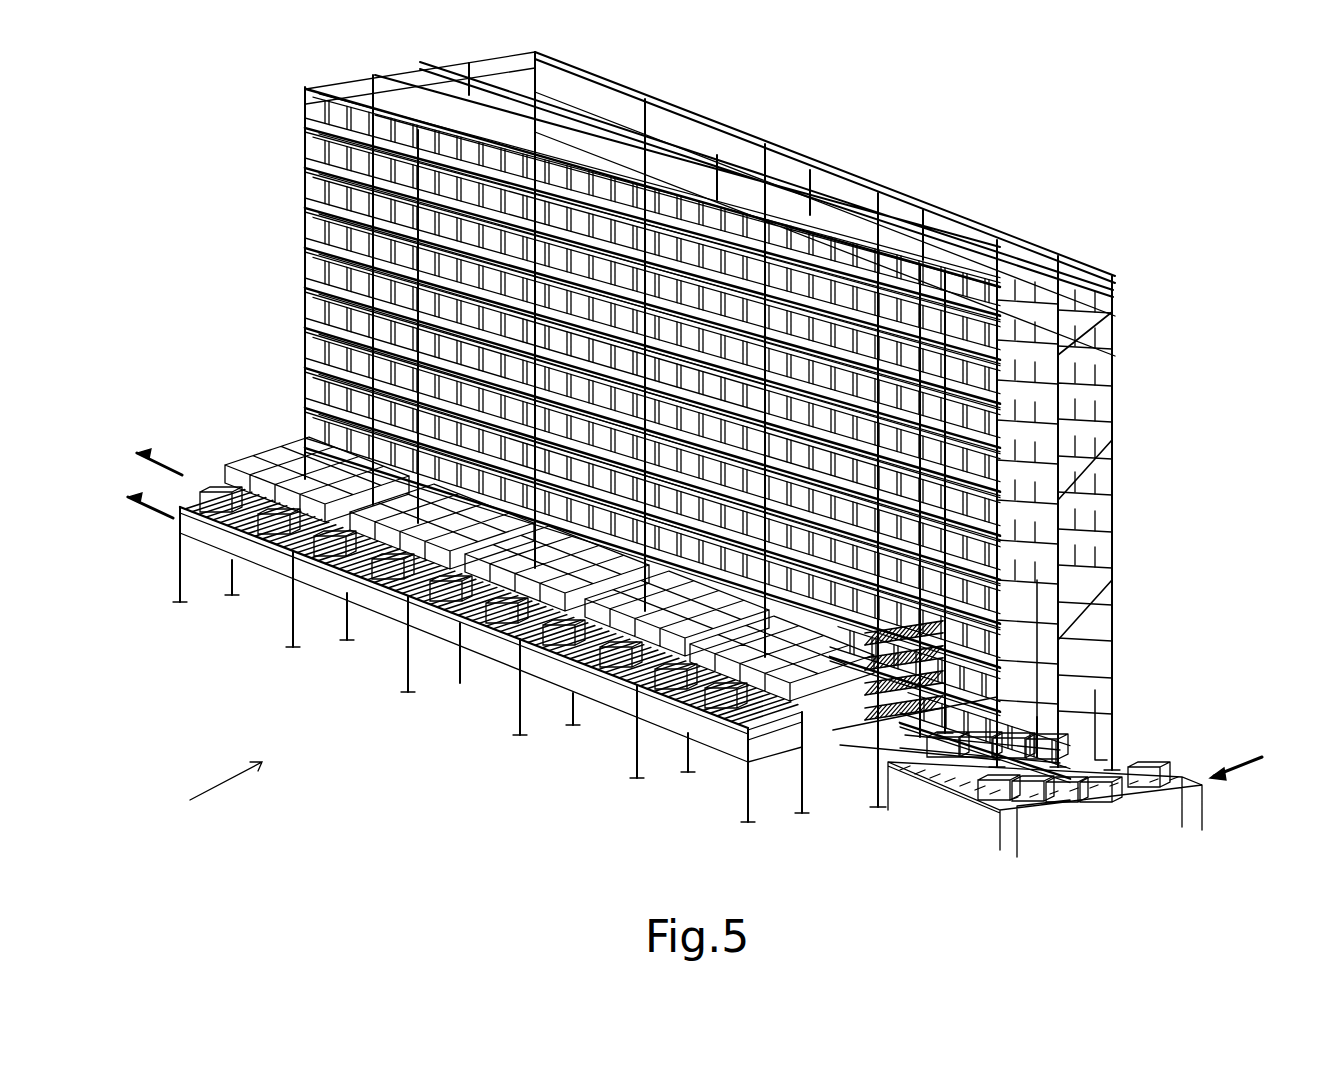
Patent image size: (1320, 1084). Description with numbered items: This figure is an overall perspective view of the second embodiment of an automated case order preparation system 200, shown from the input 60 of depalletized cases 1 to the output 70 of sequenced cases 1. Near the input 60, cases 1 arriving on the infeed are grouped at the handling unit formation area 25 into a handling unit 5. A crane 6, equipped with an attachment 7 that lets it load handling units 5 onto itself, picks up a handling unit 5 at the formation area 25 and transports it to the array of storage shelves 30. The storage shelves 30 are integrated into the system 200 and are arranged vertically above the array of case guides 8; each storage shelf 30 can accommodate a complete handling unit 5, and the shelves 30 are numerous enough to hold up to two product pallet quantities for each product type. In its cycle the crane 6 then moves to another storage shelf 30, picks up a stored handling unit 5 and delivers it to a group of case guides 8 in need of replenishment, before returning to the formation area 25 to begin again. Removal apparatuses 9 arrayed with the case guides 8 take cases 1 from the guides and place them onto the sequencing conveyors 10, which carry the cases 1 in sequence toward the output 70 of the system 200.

The case 1 is at (317, 180).
The handling unit 5 is at (913, 752).
The crane 6 is at (1081, 699).
The attachment 7 is at (1092, 734).
The case guide 8 is at (927, 668).
The removal apparatus 9 is at (647, 677).
The sequencing conveyor 10 is at (196, 560).
The handling unit formation area 25 is at (940, 816).
The storage shelf 30 is at (333, 317).
The input 60 is at (1251, 724).
The output 70 is at (163, 423).
The system embodiment 200 is at (201, 794).